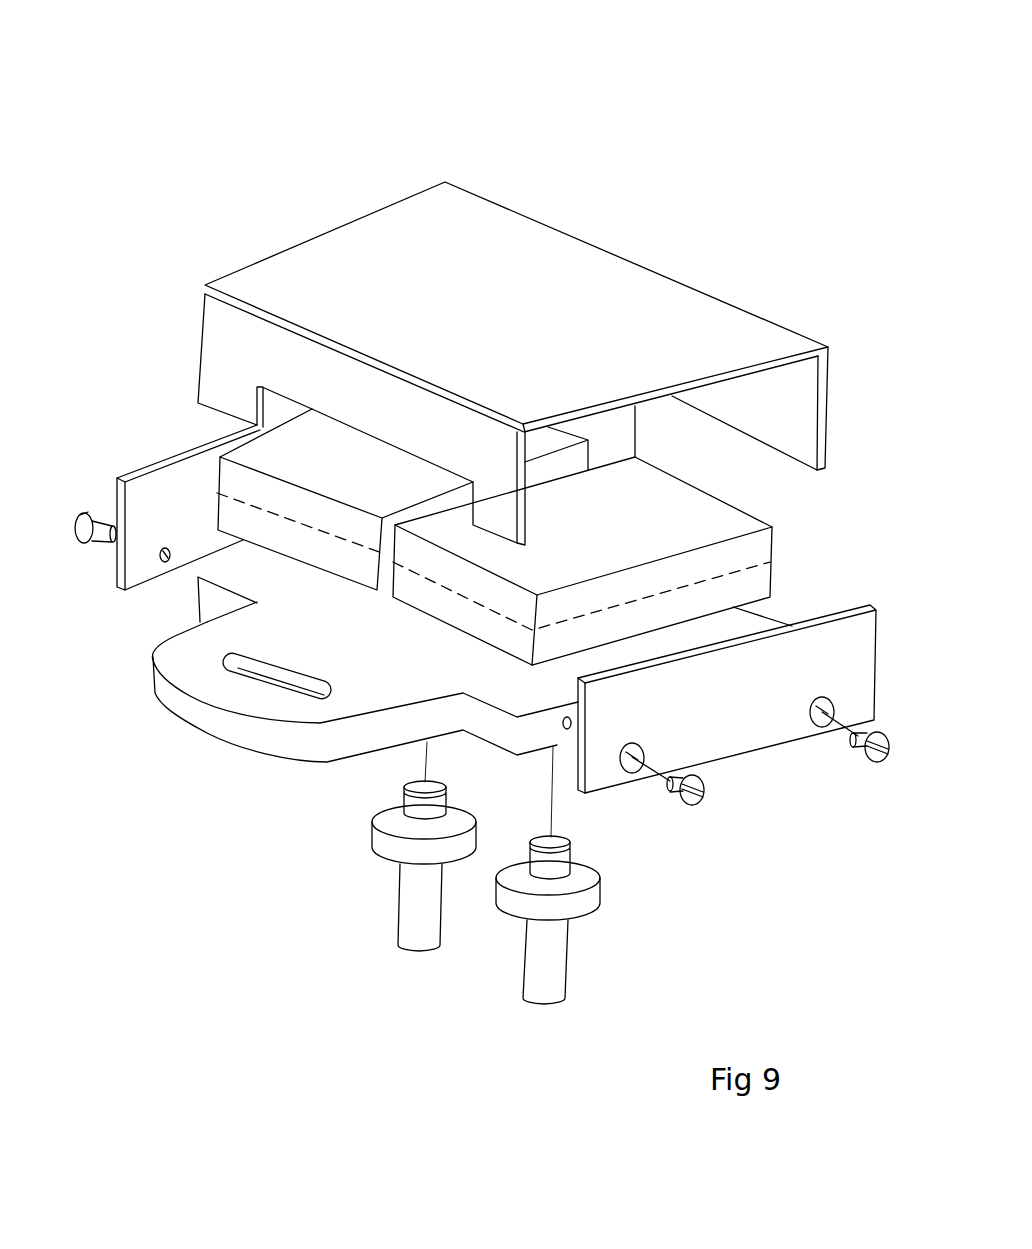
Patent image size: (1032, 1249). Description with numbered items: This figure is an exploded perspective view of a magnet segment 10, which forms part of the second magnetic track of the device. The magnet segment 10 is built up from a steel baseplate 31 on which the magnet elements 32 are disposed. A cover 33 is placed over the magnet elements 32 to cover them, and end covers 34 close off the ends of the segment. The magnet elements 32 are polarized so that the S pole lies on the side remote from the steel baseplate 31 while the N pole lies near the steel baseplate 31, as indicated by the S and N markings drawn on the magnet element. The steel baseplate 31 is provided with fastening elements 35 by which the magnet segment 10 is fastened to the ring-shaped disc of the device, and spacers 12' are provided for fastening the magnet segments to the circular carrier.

The magnet segment 10 is at (585, 152).
The cover 33 is at (737, 330).
The magnet elements 32 is at (752, 552).
The end covers 34 is at (150, 497).
The steel baseplate 31 is at (232, 575).
The fastening elements 35 is at (283, 740).
The spacers 12' is at (548, 873).